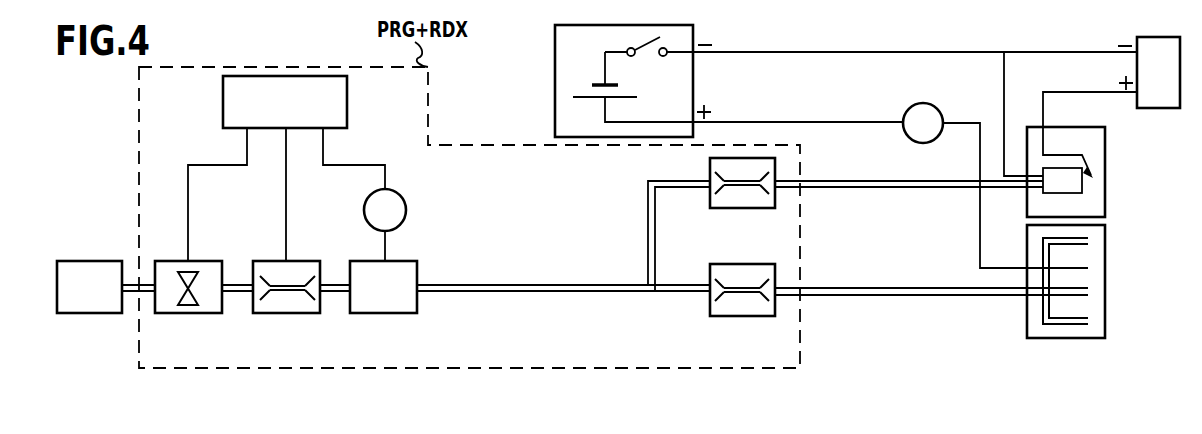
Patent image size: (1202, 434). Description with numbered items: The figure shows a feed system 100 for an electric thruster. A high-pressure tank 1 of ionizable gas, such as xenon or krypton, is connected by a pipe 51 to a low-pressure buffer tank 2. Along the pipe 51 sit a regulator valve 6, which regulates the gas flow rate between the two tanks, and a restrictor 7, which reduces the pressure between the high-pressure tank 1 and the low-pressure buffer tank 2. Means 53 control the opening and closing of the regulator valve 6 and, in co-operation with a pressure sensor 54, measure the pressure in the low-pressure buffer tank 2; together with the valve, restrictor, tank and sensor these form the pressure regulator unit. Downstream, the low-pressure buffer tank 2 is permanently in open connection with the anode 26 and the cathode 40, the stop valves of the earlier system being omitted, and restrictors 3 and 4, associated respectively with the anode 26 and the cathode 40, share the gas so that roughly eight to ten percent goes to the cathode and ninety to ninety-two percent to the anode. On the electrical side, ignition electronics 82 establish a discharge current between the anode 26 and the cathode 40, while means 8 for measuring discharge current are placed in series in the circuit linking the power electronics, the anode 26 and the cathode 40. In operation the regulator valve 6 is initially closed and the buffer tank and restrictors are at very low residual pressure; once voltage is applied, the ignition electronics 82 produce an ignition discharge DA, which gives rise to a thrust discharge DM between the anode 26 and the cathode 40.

The high-pressure tank 1 is at (82, 299).
The low-pressure buffer tank 2 is at (376, 299).
The restrictor 3 is at (740, 208).
The restrictor 4 is at (740, 316).
The regulator valve 6 is at (188, 313).
The restrictor 7 is at (286, 313).
The means for measuring discharge current 8 is at (915, 136).
The anode 26 is at (1065, 338).
The cathode 40 is at (1093, 127).
The pipe 51 is at (132, 293).
The means for controlling the opening and closing of the regulator valve 53 is at (275, 112).
The pressure sensor 54 is at (375, 222).
The ignition electronics 82 is at (1148, 83).
The feed system 100 is at (157, 152).
The ignition discharge DA is at (1093, 172).
The thrust discharge DM is at (1110, 176).